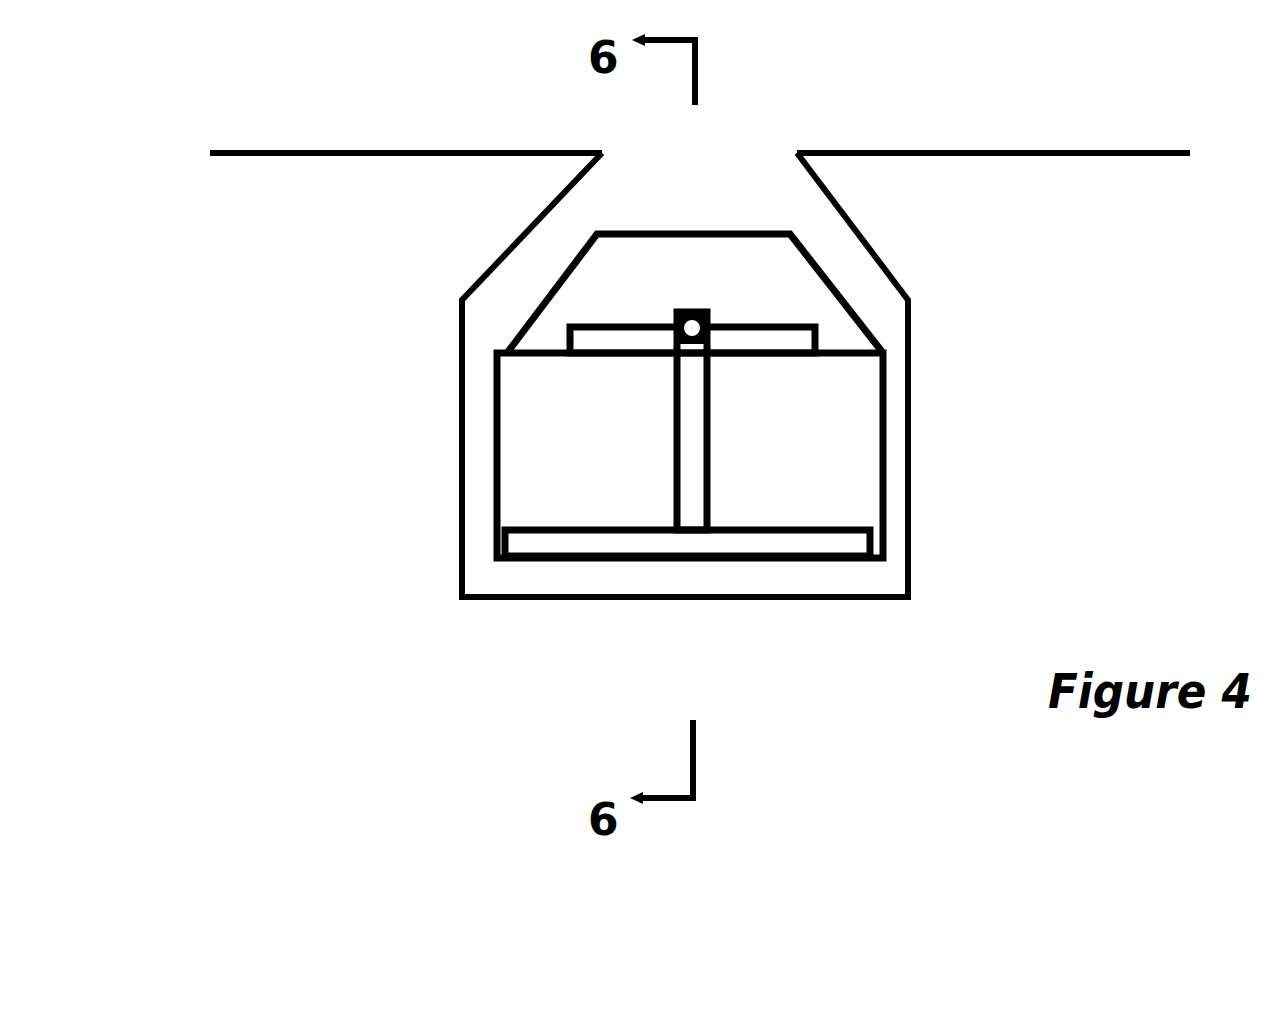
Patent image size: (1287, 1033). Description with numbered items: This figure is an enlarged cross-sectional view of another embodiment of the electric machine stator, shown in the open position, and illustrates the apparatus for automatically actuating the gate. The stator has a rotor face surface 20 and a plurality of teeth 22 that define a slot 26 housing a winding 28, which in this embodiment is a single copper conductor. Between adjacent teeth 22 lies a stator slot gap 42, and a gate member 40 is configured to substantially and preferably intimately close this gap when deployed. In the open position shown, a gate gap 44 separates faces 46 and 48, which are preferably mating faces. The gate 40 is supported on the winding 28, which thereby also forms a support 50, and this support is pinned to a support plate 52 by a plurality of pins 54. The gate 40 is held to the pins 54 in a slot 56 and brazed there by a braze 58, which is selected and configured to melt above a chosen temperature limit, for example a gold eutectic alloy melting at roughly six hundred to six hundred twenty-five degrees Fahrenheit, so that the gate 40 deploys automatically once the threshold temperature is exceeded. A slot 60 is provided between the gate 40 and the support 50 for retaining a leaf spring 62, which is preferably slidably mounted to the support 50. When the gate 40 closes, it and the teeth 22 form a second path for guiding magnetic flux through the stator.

The rotor face surface 20 is at (368, 148).
The teeth 22 is at (316, 180).
The stator slot gap 42 is at (665, 147).
The gate gap 44 is at (498, 303).
The face 48 is at (902, 278).
The gate member 40 is at (507, 335).
The face 46 is at (825, 278).
The support 50 is at (492, 452).
The leaf spring 62 is at (590, 348).
The slot 60 is at (563, 342).
The pins 54 is at (670, 407).
The braze 58 is at (712, 336).
The slot 56 is at (716, 311).
The support plate 52 is at (542, 540).
The slots 26 is at (490, 605).
The winding 28 is at (622, 495).